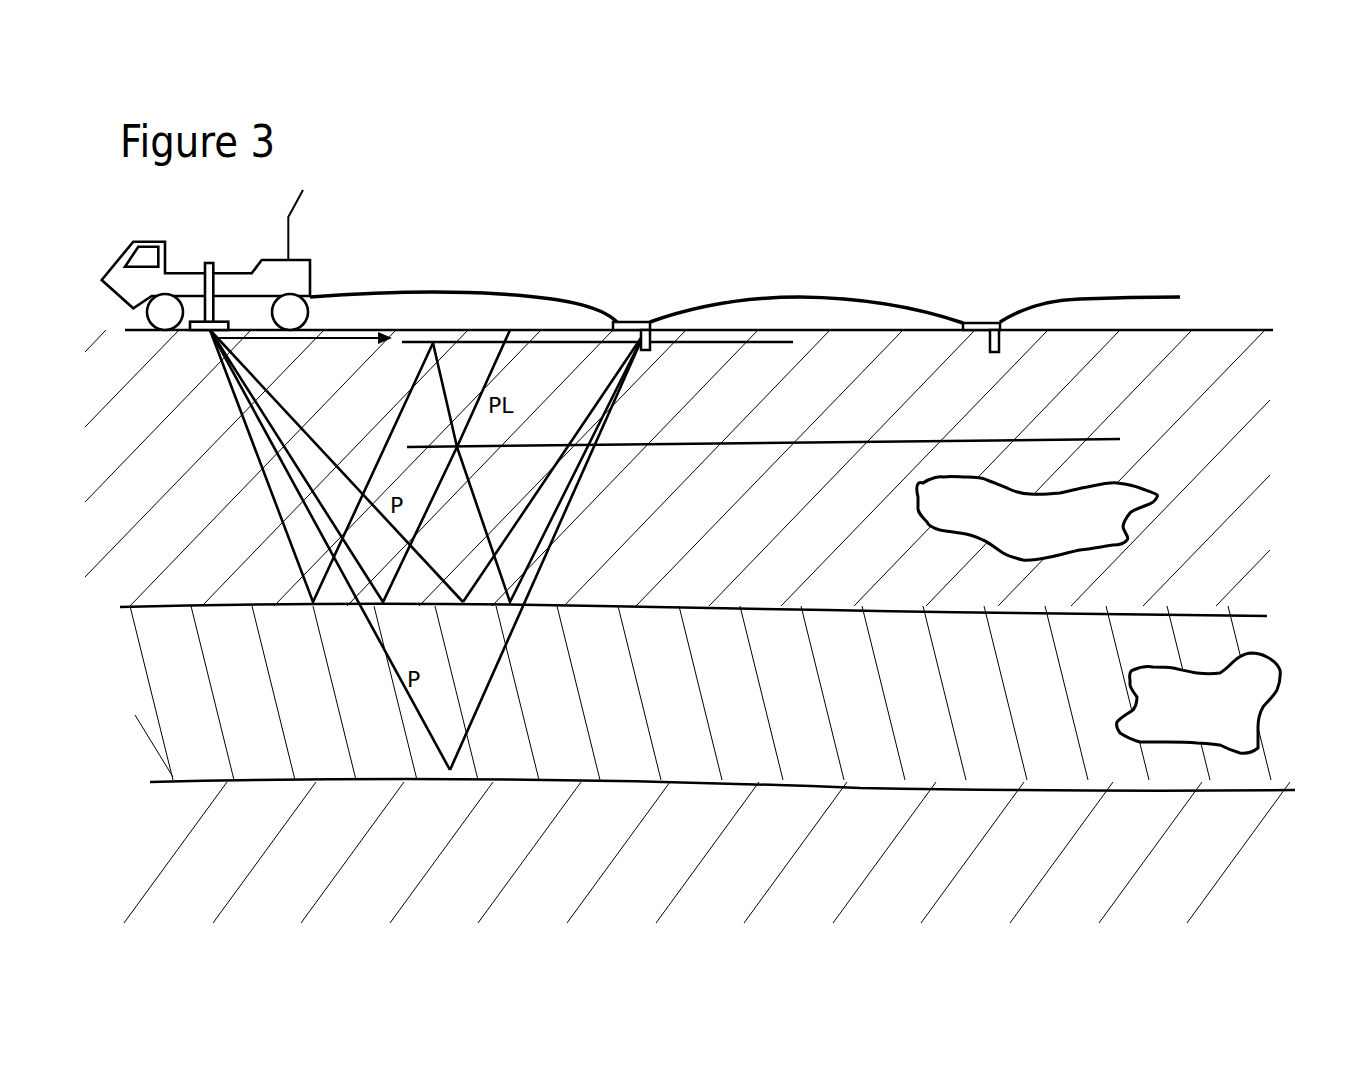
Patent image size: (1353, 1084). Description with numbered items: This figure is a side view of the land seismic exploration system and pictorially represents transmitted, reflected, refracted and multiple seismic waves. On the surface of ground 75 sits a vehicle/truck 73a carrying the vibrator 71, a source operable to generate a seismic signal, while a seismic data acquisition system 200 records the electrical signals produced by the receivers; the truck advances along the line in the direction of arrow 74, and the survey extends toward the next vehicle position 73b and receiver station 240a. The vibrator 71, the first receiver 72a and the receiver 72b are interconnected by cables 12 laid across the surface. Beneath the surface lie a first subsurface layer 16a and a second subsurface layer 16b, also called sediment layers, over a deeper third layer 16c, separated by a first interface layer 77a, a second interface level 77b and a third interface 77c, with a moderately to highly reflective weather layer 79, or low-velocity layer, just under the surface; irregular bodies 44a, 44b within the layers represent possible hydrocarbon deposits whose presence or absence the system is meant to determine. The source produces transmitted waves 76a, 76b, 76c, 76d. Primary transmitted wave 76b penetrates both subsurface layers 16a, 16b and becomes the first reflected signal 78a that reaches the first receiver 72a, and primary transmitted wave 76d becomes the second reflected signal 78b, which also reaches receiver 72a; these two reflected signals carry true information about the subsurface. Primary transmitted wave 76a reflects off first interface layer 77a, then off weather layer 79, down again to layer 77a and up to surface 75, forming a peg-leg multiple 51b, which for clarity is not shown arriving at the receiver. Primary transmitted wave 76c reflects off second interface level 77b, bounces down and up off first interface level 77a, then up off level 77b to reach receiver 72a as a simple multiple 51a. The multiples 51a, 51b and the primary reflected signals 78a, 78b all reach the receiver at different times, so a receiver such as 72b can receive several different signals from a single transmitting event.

The cable 12 is at (490, 295).
The first subsurface layer 16a is at (1228, 390).
The second subsurface layer 16b is at (296, 700).
The third subsurface layer 16c is at (307, 850).
The subsurface anomaly 44a is at (1145, 488).
The subsurface anomaly 44b is at (1220, 672).
The simple multiple 51a is at (555, 507).
The peg-leg multiple 51b is at (495, 370).
The vibrator 71 is at (213, 268).
The first receiver 72a is at (638, 322).
The receiver 72b is at (973, 323).
The vehicle/truck 73a is at (122, 265).
The receiver array direction 73b is at (1273, 212).
The direction of travel 74 is at (337, 337).
The ground surface 75 is at (1200, 330).
The primary transmitted wave 76a is at (252, 447).
The primary transmitted wave 76b is at (290, 482).
The primary transmitted wave 76c is at (262, 410).
The primary transmitted wave 76d is at (310, 433).
The first interface layer 77a is at (680, 447).
The second interface level 77b is at (663, 606).
The third reflector boundary 77c is at (688, 784).
The first reflected signal 78a is at (490, 685).
The second reflected signal 78b is at (557, 455).
The weather layer 79 is at (710, 343).
The seismic data acquisition system 200 is at (1154, 212).
The receiver station 240a is at (1160, 239).